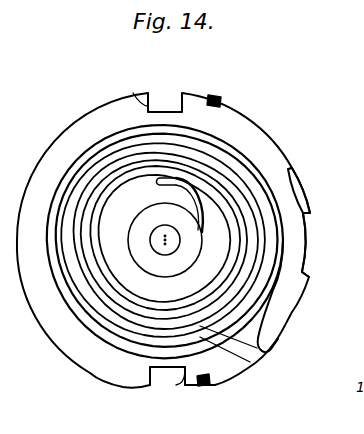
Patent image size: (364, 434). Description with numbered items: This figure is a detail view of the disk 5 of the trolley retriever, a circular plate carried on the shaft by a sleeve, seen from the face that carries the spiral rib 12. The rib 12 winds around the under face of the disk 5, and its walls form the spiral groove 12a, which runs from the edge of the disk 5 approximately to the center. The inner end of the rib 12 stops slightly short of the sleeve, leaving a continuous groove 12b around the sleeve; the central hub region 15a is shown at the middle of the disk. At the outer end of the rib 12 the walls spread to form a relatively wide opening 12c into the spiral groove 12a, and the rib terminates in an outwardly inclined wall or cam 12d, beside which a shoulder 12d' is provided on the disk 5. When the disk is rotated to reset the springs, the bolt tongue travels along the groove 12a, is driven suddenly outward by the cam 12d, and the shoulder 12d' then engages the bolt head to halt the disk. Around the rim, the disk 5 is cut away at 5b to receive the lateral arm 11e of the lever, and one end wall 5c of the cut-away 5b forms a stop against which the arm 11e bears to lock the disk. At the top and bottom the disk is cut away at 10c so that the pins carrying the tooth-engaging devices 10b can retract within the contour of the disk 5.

The disk 5 is at (71, 123).
The cut-away portion 5b is at (306, 246).
The end wall 5c is at (292, 168).
The engaging device 10b is at (162, 104).
The cut-away 10c is at (136, 96).
The arm 11e is at (306, 210).
The spiral rib 12 is at (112, 325).
The spiral groove 12a is at (84, 296).
The continuous groove 12b is at (180, 236).
The wide opening 12c is at (281, 288).
The cam 12d is at (288, 339).
The shoulder 12d' is at (240, 354).
The hub 15a is at (200, 243).